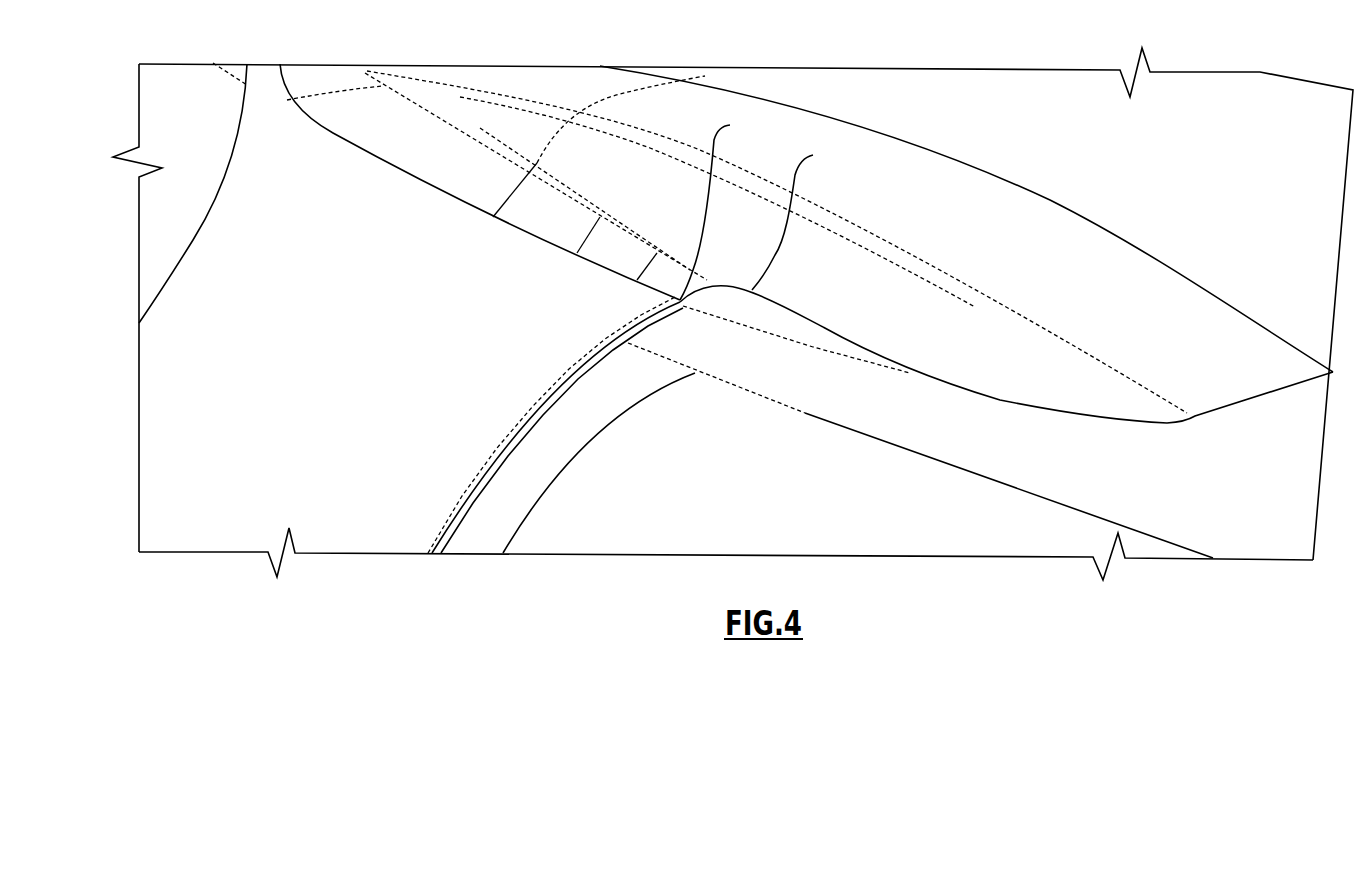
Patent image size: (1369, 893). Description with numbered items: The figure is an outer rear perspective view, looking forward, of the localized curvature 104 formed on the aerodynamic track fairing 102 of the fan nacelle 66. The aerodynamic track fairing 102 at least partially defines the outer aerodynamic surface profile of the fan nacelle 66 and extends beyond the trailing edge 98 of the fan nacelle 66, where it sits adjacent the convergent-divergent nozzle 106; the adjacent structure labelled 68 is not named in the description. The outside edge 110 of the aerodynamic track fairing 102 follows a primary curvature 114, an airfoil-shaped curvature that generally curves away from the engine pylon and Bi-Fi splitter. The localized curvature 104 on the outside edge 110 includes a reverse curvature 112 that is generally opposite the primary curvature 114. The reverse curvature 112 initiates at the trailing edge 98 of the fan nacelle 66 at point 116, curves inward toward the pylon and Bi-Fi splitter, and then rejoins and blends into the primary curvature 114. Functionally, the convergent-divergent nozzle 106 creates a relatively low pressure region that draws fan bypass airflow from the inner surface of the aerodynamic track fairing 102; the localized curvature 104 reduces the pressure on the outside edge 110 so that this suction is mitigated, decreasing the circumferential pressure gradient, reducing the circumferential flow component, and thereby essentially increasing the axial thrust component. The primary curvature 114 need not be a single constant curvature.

The fan nacelle 66 is at (380, 324).
The second component 68 is at (892, 520).
The trailing edge 98 is at (447, 525).
The aerodynamic track fairing 102 is at (922, 187).
The localized curvature 104 is at (830, 318).
The convergent-divergent nozzle 106 is at (487, 457).
The outside edge 110 is at (927, 380).
The reverse curvature 112 is at (803, 217).
The primary curvature 114 is at (817, 350).
The point 116 is at (725, 208).